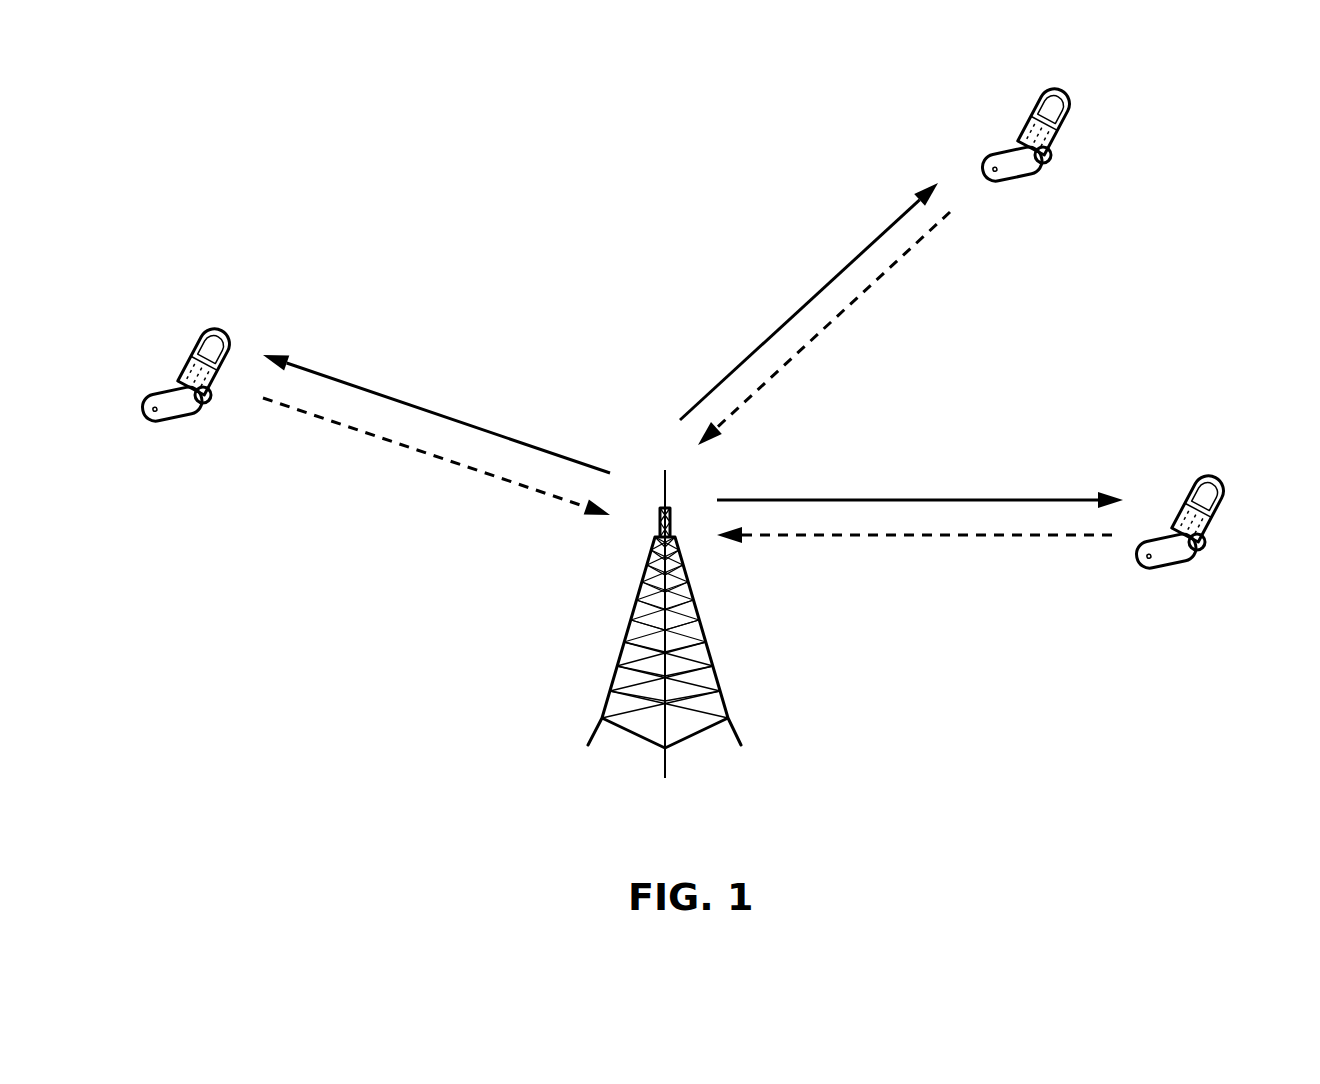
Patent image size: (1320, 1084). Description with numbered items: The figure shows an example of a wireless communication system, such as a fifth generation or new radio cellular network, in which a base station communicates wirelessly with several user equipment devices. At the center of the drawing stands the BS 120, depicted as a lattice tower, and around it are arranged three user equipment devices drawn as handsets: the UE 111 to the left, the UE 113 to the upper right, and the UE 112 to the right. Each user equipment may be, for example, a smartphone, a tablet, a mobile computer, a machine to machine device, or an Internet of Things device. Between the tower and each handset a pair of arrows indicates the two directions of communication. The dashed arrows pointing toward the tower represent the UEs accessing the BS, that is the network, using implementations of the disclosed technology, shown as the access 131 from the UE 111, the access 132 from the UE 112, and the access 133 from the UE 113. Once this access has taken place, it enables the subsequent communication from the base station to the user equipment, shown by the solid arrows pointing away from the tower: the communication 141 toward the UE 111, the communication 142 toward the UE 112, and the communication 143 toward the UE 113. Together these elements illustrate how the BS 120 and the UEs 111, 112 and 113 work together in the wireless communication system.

The user equipment 111 is at (202, 417).
The user equipment 112 is at (1190, 565).
The user equipment 113 is at (1042, 175).
The base station 120 is at (723, 702).
The access using implementations of the disclosed technology 131 is at (480, 468).
The access using implementations of the disclosed technology 132 is at (880, 537).
The access using implementations of the disclosed technology 133 is at (850, 303).
The subsequent communication 141 is at (372, 393).
The subsequent communication 142 is at (1030, 498).
The subsequent communication 143 is at (857, 253).